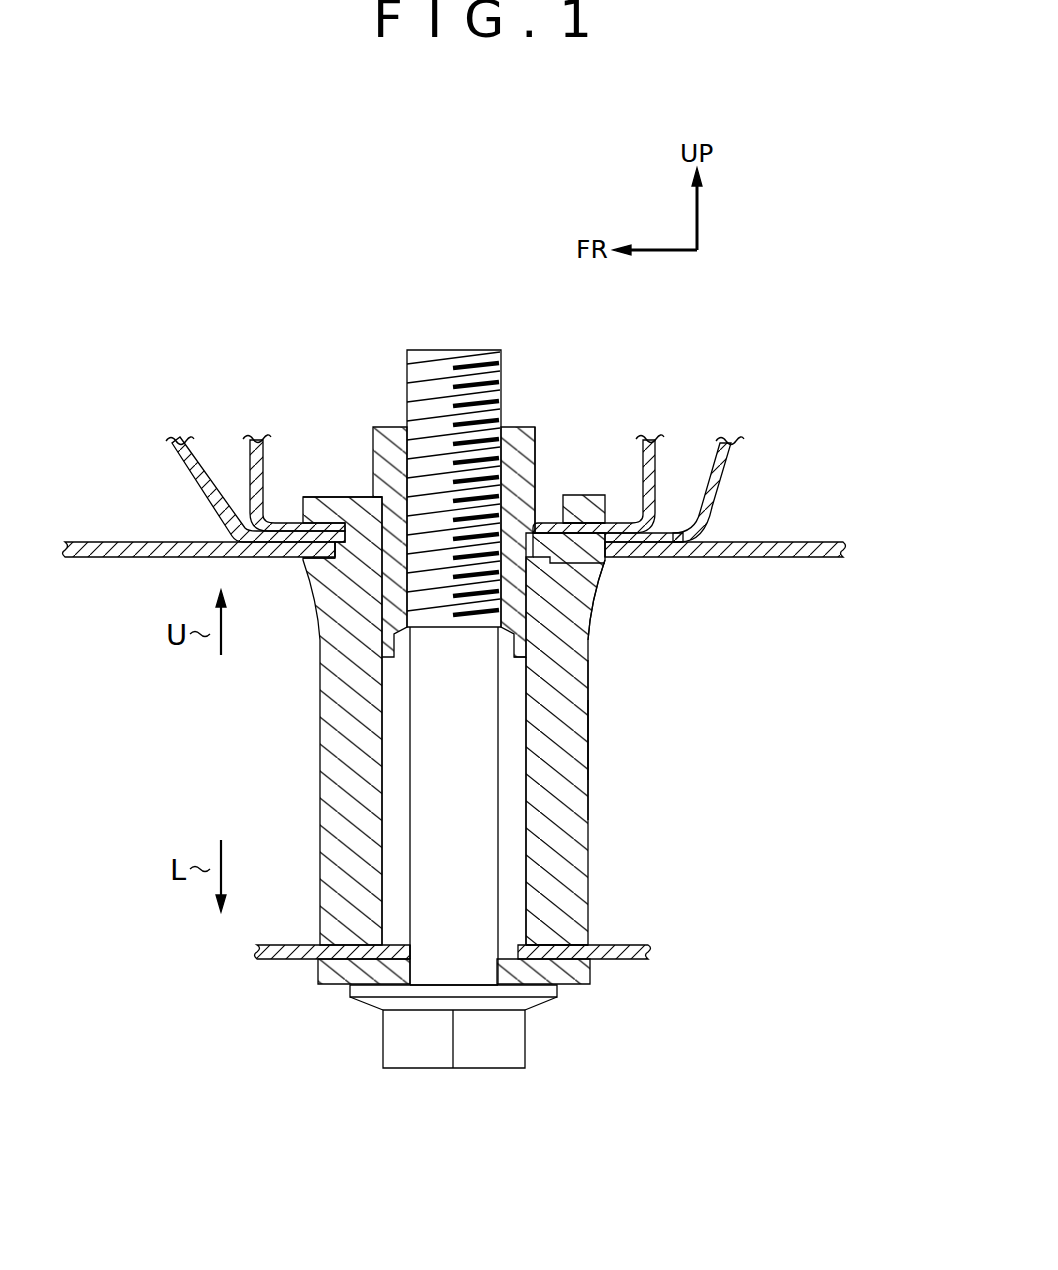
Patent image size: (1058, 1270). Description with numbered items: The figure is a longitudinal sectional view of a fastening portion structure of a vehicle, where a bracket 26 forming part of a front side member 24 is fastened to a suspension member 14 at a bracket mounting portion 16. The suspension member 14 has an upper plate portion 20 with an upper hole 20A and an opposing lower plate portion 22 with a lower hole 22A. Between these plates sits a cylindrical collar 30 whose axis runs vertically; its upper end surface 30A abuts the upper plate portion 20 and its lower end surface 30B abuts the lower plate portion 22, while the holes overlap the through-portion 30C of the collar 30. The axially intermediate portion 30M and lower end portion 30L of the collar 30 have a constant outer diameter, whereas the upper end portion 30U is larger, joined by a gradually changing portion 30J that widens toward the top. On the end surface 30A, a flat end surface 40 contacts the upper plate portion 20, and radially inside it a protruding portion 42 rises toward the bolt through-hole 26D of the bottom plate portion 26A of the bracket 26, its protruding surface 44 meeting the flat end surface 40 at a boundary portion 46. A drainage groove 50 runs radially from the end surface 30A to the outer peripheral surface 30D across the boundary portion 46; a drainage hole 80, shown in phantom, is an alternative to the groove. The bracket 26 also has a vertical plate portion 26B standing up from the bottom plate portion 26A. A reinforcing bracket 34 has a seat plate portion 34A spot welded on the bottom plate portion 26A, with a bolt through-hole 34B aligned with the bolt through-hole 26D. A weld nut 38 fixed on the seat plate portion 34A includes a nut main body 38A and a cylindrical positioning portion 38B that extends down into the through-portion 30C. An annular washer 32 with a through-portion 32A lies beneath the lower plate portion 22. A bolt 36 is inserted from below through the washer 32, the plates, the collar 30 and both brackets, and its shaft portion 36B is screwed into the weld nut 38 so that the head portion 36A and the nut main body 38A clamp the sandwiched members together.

The suspension member 14 is at (800, 514).
The bracket mounting portion 16 is at (276, 378).
The upper plate portion 20 is at (742, 558).
The upper hole 20A is at (303, 571).
The lower plate portion 22 is at (633, 945).
The lower hole 22A is at (390, 947).
The front side member 24 is at (767, 452).
The bracket 26 is at (743, 478).
The bottom plate portion 26A is at (668, 530).
The vertical plate portion 26B is at (195, 456).
The bolt through-hole 26D is at (375, 522).
The collar 30 is at (668, 747).
The end surface 30A is at (322, 497).
The end surface 30B is at (340, 986).
The through-portion 30C is at (393, 727).
The outer peripheral surface 30D is at (596, 715).
The gradually changing portion 30J is at (590, 612).
The end portion 30L is at (589, 943).
The axially intermediate portion 30M is at (590, 758).
The end portion 30U is at (612, 566).
The washer 32 is at (340, 990).
The through-portion 32A is at (413, 960).
The reinforcing bracket 34 is at (660, 464).
The seat plate portion 34A is at (645, 457).
The bolt through-hole 34B is at (348, 526).
The bolt 36 is at (507, 1080).
The head portion 36A is at (525, 1035).
The shaft portion 36B is at (500, 383).
The weld nut 38 is at (546, 432).
The nut main body 38A is at (536, 456).
The positioning portion 38B is at (527, 658).
The flat end surface 40 is at (620, 573).
The protruding portion 42 is at (545, 524).
The protruding surface 44 is at (541, 540).
The boundary portion 46 is at (553, 548).
The drainage groove 50 is at (582, 572).
The drainage hole 80 is at (313, 603).